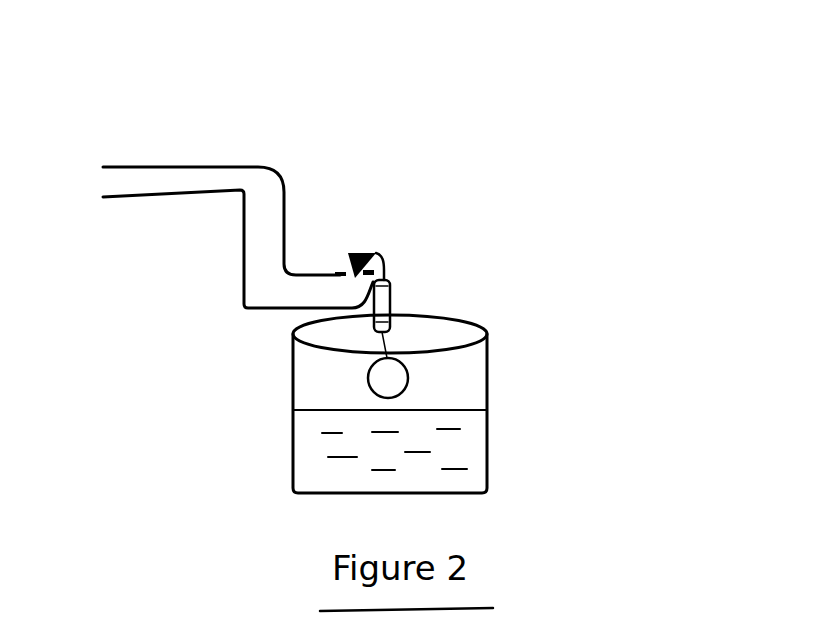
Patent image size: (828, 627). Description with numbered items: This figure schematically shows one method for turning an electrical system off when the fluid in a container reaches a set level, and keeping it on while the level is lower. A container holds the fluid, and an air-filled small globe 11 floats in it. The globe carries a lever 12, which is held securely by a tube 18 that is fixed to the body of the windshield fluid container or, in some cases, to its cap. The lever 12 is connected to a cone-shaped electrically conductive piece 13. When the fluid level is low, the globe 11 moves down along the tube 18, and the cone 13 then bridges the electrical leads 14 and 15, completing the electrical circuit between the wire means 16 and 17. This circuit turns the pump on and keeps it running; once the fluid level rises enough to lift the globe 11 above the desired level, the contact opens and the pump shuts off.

The air-filled small globe 11 is at (407, 367).
The lever 12 is at (386, 257).
The cone-shaped electrically conductor piece 13 is at (357, 253).
The electrical lead 14 is at (340, 271).
The electrical lead 15 is at (374, 254).
The wire means 16 is at (195, 165).
The wire means 17 is at (180, 199).
The tube 18 is at (391, 295).